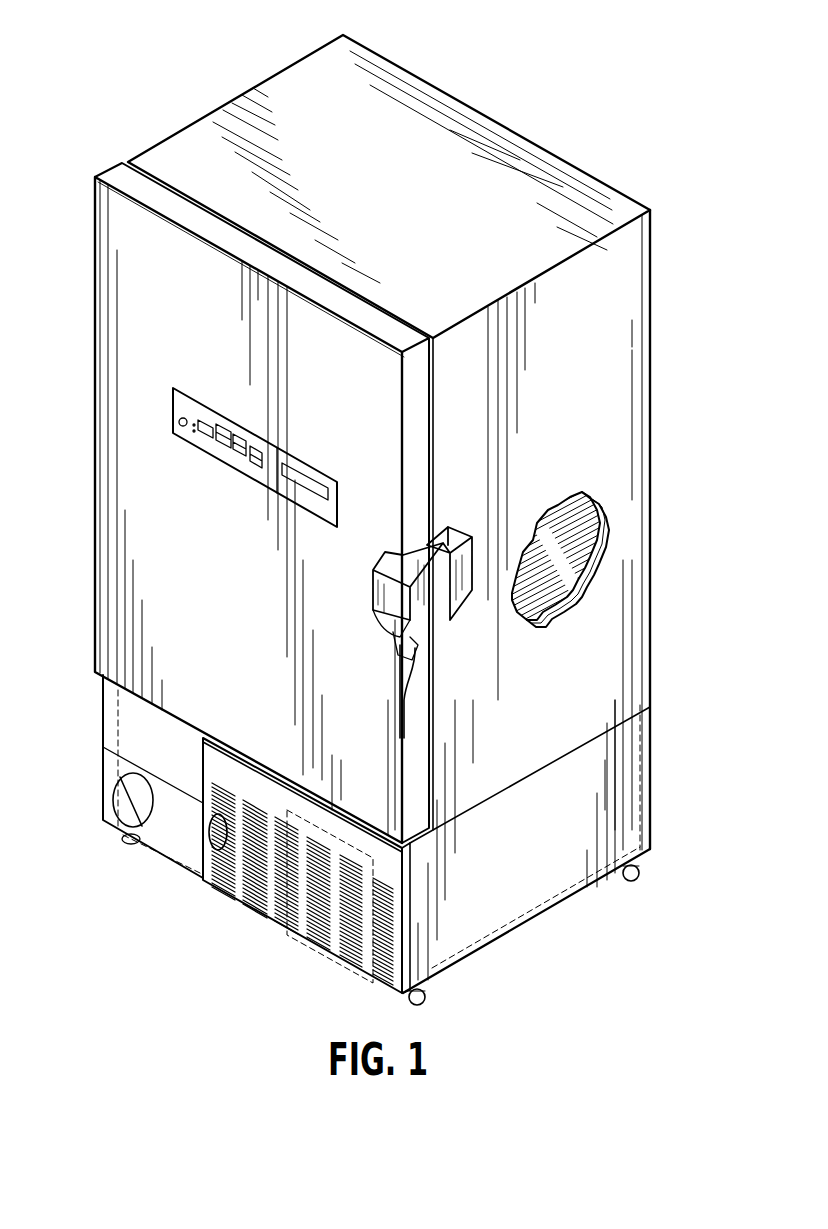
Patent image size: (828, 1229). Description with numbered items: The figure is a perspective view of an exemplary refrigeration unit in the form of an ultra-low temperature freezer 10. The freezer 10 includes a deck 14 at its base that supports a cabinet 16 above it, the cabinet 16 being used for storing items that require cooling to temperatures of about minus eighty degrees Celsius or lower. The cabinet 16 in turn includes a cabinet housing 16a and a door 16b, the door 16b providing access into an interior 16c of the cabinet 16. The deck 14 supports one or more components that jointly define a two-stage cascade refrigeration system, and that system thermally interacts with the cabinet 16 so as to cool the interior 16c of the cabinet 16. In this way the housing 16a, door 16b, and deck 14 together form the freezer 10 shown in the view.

The ultra-low temperature freezer 10 is at (139, 67).
The deck 14 is at (655, 786).
The cabinet 16 is at (655, 397).
The cabinet housing 16a is at (642, 308).
The door 16b is at (102, 263).
The interior 16c is at (582, 546).